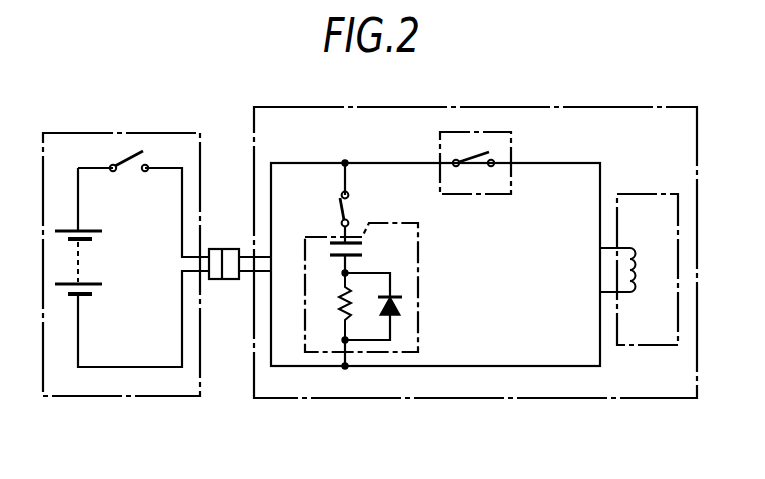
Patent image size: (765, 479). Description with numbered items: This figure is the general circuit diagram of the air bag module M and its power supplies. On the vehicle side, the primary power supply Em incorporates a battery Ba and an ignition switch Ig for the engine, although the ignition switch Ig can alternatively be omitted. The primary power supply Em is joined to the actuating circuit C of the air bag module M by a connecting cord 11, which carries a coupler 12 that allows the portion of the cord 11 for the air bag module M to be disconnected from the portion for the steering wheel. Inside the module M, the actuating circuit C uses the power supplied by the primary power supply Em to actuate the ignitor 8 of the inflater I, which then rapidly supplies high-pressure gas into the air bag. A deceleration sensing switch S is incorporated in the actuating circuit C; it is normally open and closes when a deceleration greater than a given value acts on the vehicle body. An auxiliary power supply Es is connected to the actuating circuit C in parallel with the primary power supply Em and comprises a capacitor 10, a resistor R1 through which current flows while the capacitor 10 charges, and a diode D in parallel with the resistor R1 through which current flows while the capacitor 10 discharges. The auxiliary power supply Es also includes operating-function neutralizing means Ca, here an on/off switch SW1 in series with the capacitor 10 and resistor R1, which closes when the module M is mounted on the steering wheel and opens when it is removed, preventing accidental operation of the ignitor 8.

The primary power supply Em is at (136, 399).
The ignition switch Ig is at (137, 158).
The battery Ba is at (89, 283).
The connecting cord 11 is at (246, 249).
The coupler 12 is at (222, 279).
The air bag module M is at (585, 106).
The actuating circuit C is at (558, 166).
The deceleration sensing switch S is at (440, 142).
The inflater I is at (636, 194).
The ignitor 8 is at (635, 267).
The operating-function neutralizing means Ca is at (336, 213).
The on/off switch SW1 is at (340, 208).
The capacitor 10 is at (356, 239).
The auxiliary power supply Es is at (420, 252).
The resistor R1 is at (344, 315).
The diode D is at (378, 308).